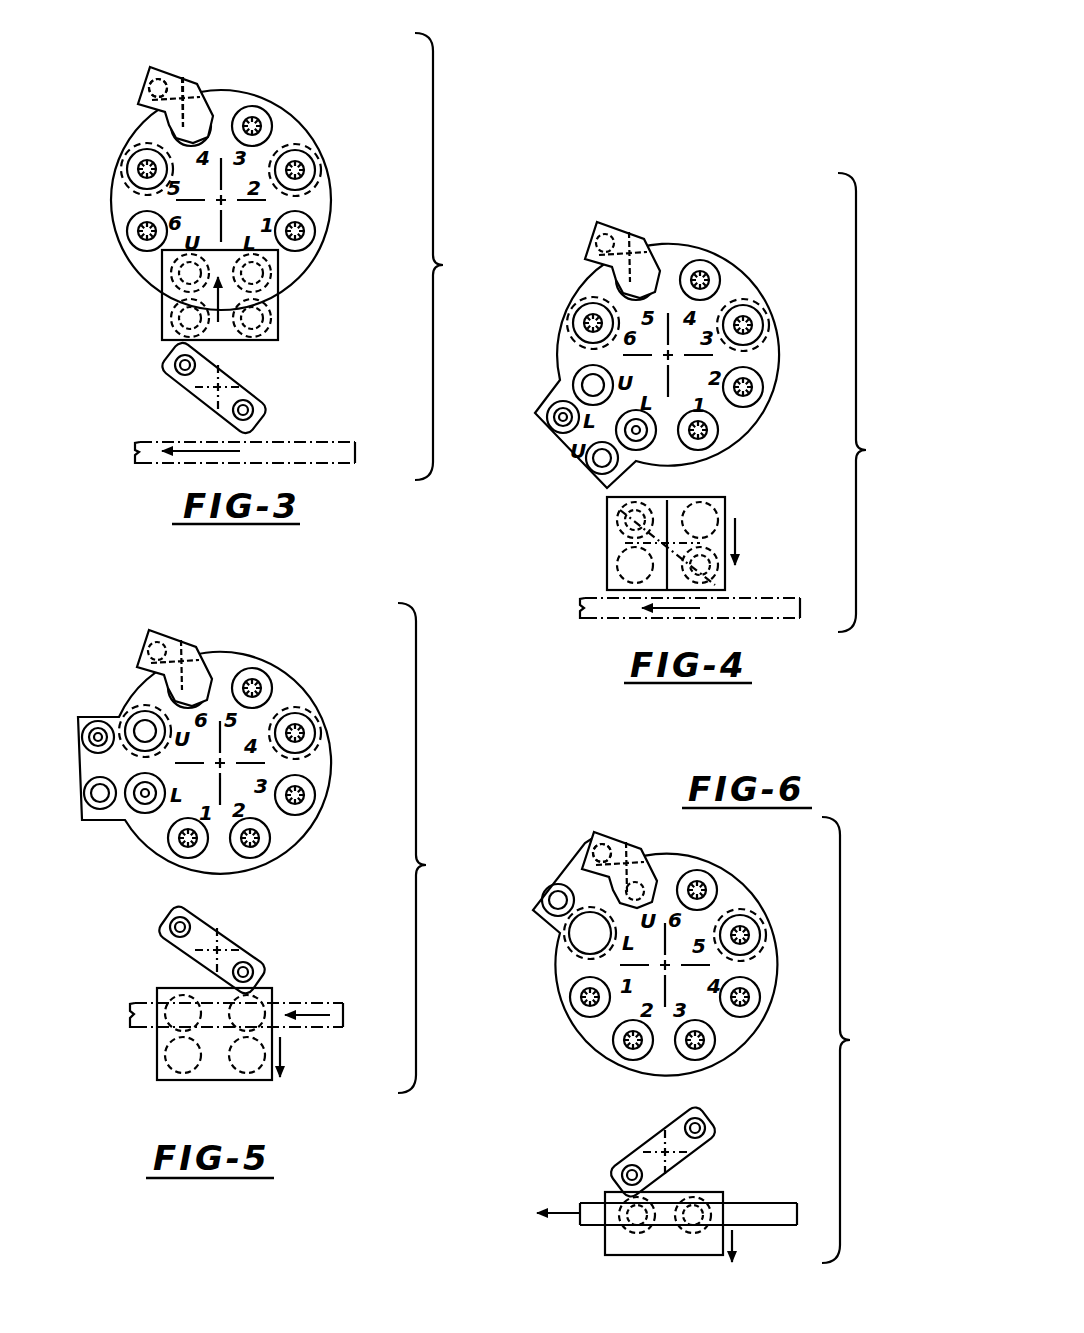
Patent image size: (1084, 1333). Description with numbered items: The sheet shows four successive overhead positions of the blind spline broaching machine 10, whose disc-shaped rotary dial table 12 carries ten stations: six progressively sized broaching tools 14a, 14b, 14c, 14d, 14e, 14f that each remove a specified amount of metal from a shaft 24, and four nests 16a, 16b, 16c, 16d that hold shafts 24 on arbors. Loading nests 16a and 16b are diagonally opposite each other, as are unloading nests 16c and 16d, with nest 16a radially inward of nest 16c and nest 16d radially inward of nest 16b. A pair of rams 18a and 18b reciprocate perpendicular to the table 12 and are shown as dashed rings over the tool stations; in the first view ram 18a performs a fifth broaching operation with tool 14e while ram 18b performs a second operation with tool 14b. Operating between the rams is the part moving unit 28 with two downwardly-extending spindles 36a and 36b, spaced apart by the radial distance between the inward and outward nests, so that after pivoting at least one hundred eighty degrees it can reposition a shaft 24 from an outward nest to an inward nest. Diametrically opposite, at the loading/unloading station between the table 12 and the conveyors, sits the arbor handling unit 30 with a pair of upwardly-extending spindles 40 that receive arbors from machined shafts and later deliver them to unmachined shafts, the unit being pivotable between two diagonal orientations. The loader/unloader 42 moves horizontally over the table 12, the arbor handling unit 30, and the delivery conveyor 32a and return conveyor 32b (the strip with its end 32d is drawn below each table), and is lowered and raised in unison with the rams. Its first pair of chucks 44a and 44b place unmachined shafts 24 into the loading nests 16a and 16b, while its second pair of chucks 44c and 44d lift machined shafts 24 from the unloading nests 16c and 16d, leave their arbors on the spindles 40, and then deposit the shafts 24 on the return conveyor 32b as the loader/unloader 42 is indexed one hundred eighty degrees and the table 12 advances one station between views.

In FIG. 3, the blind spline broaching machine 10 is at (128, 70).
In FIG. 4, the blind spline broaching machine 10 is at (723, 230).
In FIG. 5, the blind spline broaching machine 10 is at (291, 657).
In FIG. 6, the blind spline broaching machine 10 is at (608, 788).
In FIG. 3, the rotary dial table 12 is at (335, 208).
In FIG. 4, the rotary dial table 12 is at (750, 272).
In FIG. 5, the rotary dial table 12 is at (336, 782).
In FIG. 6, the rotary dial table 12 is at (779, 1000).
In FIG. 3, the broaching tool 14a is at (300, 233).
In FIG. 3, the broaching tool 14b is at (298, 166).
In FIG. 3, the broaching tool 14c is at (256, 124).
In FIG. 4, the broaching tool 14c is at (748, 328).
In FIG. 3, the broaching tool 14d is at (228, 98).
In FIG. 5, the broaching tool 14d is at (300, 733).
In FIG. 3, the broaching tool 14e is at (142, 166).
In FIG. 6, the broaching tool 14e is at (745, 930).
In FIG. 3, the broaching tool 14f is at (143, 231).
In FIG. 4, the broaching tool 14f is at (590, 322).
In FIG. 3, the loading nest 16a is at (276, 278).
In FIG. 5, the loading nest 16a is at (143, 805).
In FIG. 6, the loading nest 16a is at (568, 933).
In FIG. 3, the loading nest 16b is at (165, 328).
In FIG. 5, the loading nest 16b is at (98, 733).
In FIG. 6, the loading nest 16b is at (598, 838).
In FIG. 3, the unloading nest 16c is at (276, 330).
In FIG. 5, the unloading nest 16c is at (100, 797).
In FIG. 6, the unloading nest 16c is at (553, 900).
In FIG. 3, the unloading nest 16d is at (162, 273).
In FIG. 5, the unloading nest 16d is at (138, 727).
In FIG. 6, the unloading nest 16d is at (641, 862).
In FIG. 3, the ram 18a is at (125, 200).
In FIG. 4, the ram 18a is at (568, 345).
In FIG. 5, the ram 18a is at (128, 712).
In FIG. 6, the ram 18a is at (578, 955).
In FIG. 3, the ram 18b is at (340, 178).
In FIG. 4, the ram 18b is at (770, 362).
In FIG. 5, the ram 18b is at (297, 710).
In FIG. 6, the ram 18b is at (748, 905).
In FIG. 3, the shaft 24 is at (160, 298).
In FIG. 3, the part moving unit 28 is at (135, 108).
In FIG. 4, the part moving unit 28 is at (620, 230).
In FIG. 5, the part moving unit 28 is at (179, 635).
In FIG. 6, the part moving unit 28 is at (577, 840).
In FIG. 3, the arbor handling unit 30 is at (257, 388).
In FIG. 4, the arbor handling unit 30 is at (662, 518).
In FIG. 5, the arbor handling unit 30 is at (242, 935).
In FIG. 6, the arbor handling unit 30 is at (639, 1140).
In FIG. 4, the delivery conveyor 32a is at (775, 620).
In FIG. 5, the delivery conveyor 32a is at (345, 1015).
In FIG. 3, the return conveyor 32b is at (140, 465).
In FIG. 4, the return conveyor 32b is at (583, 608).
In FIG. 5, the return conveyor 32b is at (130, 1023).
In FIG. 3, the conveyor strip end 32d is at (326, 468).
In FIG. 3, the spindle 36a is at (205, 97).
In FIG. 6, the spindle 36a is at (662, 880).
In FIG. 3, the spindle 36b is at (168, 82).
In FIG. 6, the spindle 36b is at (617, 836).
In FIG. 3, the spindle 40 is at (176, 375).
In FIG. 3, the loader/unloader 42 is at (282, 310).
In FIG. 4, the loader/unloader 42 is at (727, 495).
In FIG. 5, the loader/unloader 42 is at (200, 1084).
In FIG. 6, the loader/unloader 42 is at (702, 1190).
In FIG. 4, the chuck 44a is at (730, 505).
In FIG. 5, the chuck 44a is at (255, 990).
In FIG. 6, the chuck 44a is at (605, 1243).
In FIG. 4, the chuck 44b is at (616, 565).
In FIG. 5, the chuck 44b is at (175, 1075).
In FIG. 6, the chuck 44b is at (725, 1200).
In FIG. 4, the chuck 44c is at (735, 570).
In FIG. 5, the chuck 44c is at (250, 1085).
In FIG. 6, the chuck 44c is at (605, 1200).
In FIG. 4, the chuck 44d is at (614, 515).
In FIG. 5, the chuck 44d is at (183, 990).
In FIG. 6, the chuck 44d is at (725, 1210).